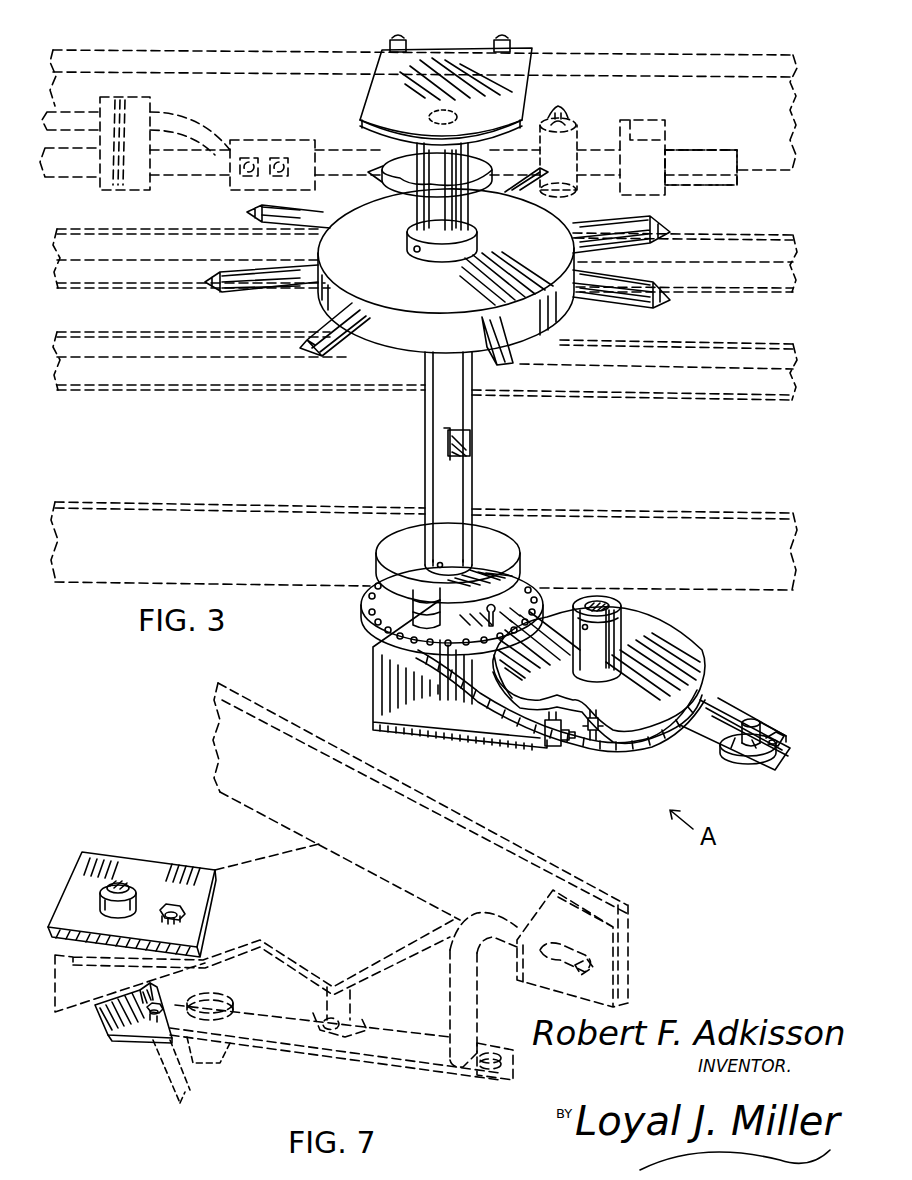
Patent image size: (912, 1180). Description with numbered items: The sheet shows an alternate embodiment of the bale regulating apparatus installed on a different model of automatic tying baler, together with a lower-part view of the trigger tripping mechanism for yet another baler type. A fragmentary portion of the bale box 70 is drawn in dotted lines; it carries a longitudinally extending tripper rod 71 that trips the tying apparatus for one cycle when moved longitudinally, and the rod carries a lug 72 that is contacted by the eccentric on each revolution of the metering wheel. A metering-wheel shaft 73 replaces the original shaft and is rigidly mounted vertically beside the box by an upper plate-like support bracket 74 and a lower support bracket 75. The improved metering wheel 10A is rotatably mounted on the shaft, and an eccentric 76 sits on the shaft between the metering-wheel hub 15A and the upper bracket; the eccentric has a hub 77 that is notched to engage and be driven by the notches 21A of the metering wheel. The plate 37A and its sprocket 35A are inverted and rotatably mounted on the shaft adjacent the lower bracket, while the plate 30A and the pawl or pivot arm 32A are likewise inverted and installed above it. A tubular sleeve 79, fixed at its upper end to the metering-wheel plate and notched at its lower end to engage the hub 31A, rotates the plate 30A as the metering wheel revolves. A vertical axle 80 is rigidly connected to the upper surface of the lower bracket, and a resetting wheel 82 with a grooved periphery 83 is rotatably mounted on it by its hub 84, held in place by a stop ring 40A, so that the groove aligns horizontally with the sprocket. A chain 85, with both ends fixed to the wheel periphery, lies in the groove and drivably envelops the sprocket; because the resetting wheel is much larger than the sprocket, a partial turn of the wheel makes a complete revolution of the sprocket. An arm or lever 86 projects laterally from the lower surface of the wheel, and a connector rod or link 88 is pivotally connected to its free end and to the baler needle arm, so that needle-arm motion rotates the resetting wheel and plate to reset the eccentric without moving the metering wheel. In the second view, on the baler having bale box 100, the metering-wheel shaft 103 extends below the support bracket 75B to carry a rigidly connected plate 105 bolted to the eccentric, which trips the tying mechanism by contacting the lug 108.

In FIG. 3, the bale box 70 is at (720, 50).
In FIG. 3, the tripper rod 71 is at (710, 150).
In FIG. 3, the lug 72 is at (568, 142).
In FIG. 3, the upper support bracket 74 is at (375, 110).
In FIG. 3, the eccentric 76 is at (385, 163).
In FIG. 3, the hub of eccentric 77 is at (462, 209).
In FIG. 3, the notches of metering wheel 21A is at (420, 208).
In FIG. 3, the metering-wheel hub 15A is at (408, 240).
In FIG. 3, the metering wheel 10A is at (582, 306).
In FIG. 3, the metering-wheel shaft 73 is at (471, 441).
In FIG. 3, the tubular sleeve 79 is at (473, 478).
In FIG. 3, the plate 30A is at (385, 543).
In FIG. 3, the hub 31A is at (465, 553).
In FIG. 3, the pawl or pivot arm 32A is at (428, 603).
In FIG. 3, the plate 37A is at (362, 619).
In FIG. 3, the lower support bracket 75 is at (422, 711).
In FIG. 3, the axle 80 is at (613, 603).
In FIG. 3, the stop ring 40A is at (606, 600).
In FIG. 3, the resetting wheel 82 is at (700, 655).
In FIG. 3, the hub of resetting wheel 84 is at (622, 660).
In FIG. 3, the sprocket 35A is at (494, 660).
In FIG. 3, the grooved periphery 83 is at (650, 746).
In FIG. 3, the chain 85 is at (524, 724).
In FIG. 3, the arm or lever 86 is at (738, 725).
In FIG. 3, the connector rod or link 88 is at (722, 775).
In FIG. 7, the bale box 100 is at (214, 768).
In FIG. 7, the support bracket 75B is at (210, 898).
In FIG. 7, the metering-wheel shaft 103 is at (118, 880).
In FIG. 7, the plate 105 is at (143, 1050).
In FIG. 7, the lug 108 is at (227, 1067).